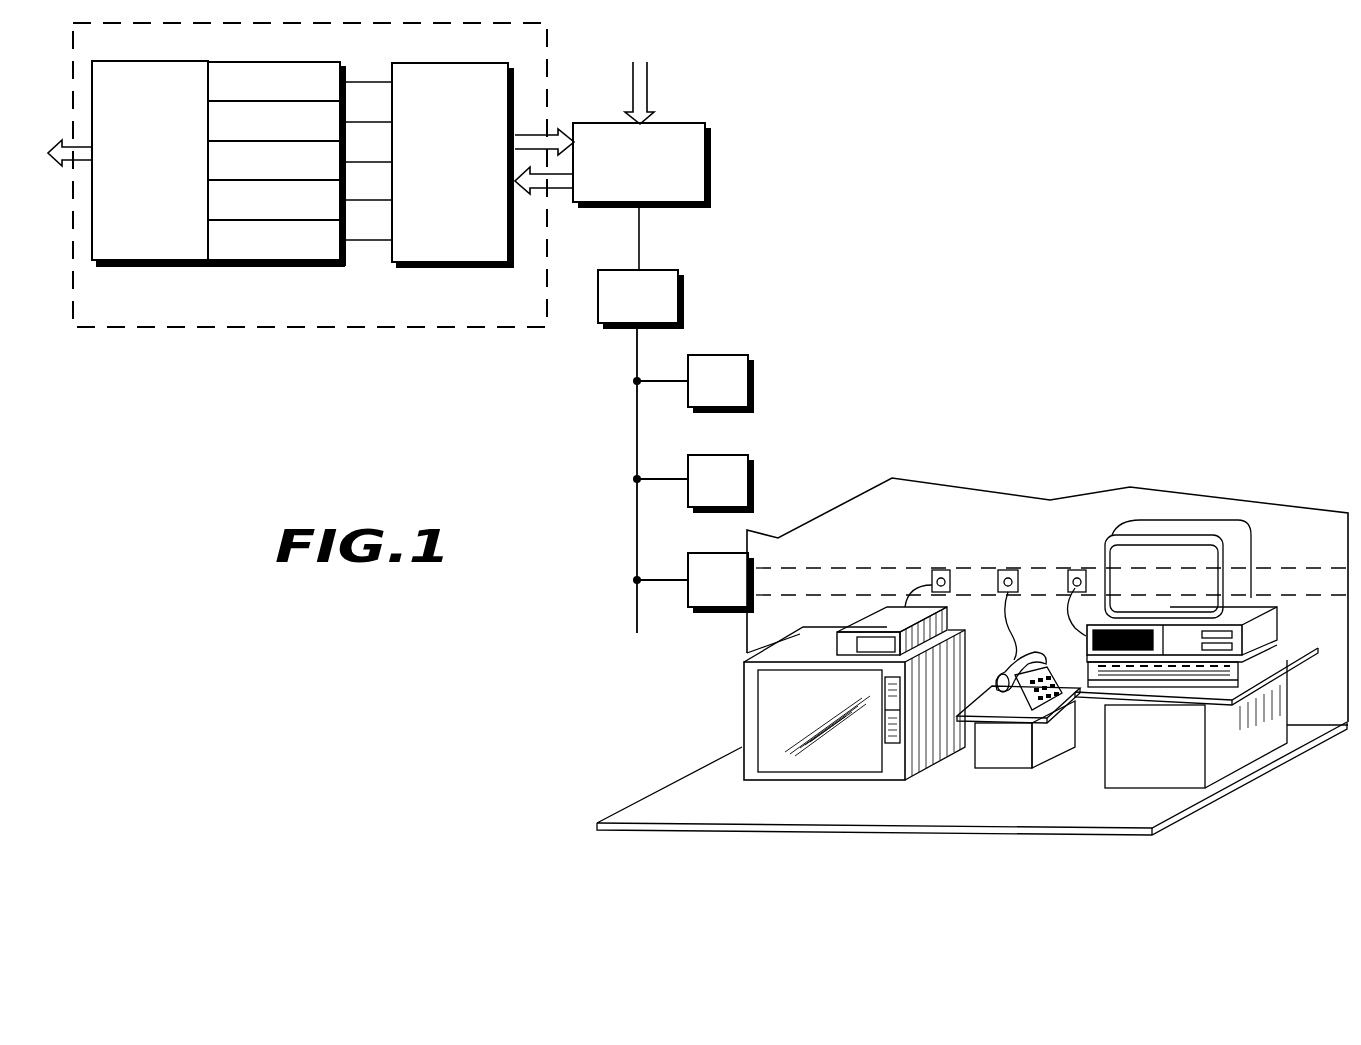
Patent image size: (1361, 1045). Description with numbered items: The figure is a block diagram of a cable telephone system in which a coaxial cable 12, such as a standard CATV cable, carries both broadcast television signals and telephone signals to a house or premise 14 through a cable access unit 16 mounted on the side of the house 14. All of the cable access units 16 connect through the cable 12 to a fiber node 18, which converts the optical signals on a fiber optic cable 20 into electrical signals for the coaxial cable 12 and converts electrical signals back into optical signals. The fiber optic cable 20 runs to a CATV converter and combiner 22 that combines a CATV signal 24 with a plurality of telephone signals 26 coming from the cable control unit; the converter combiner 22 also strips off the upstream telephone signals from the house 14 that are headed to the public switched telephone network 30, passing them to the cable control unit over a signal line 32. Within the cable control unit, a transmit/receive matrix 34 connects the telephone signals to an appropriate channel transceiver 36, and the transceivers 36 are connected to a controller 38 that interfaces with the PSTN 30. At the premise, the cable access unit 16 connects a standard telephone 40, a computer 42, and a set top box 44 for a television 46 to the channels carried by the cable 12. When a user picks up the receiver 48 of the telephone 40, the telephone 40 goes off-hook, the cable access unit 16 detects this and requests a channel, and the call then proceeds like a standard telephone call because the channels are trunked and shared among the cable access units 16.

The coaxial cable 12 is at (635, 442).
The house or premise 14 is at (746, 638).
The cable access unit 16 is at (753, 384).
The fiber node 18 is at (683, 294).
The fiber optic cable 20 is at (643, 233).
The CATV converter and combiner 22 is at (712, 162).
The CATV signal 24 is at (651, 76).
The telephone signals 26 is at (539, 133).
The public switched telephone network 30 is at (63, 112).
The signal line 32 is at (547, 193).
The transmit/receive matrix 34 is at (450, 270).
The channel transceiver 36 is at (323, 66).
The controller 38 is at (150, 240).
The telephone 40 is at (1055, 716).
The computer 42 is at (1270, 626).
The set top box 44 is at (847, 623).
The television 46 is at (812, 758).
The receiver 48 is at (1038, 655).